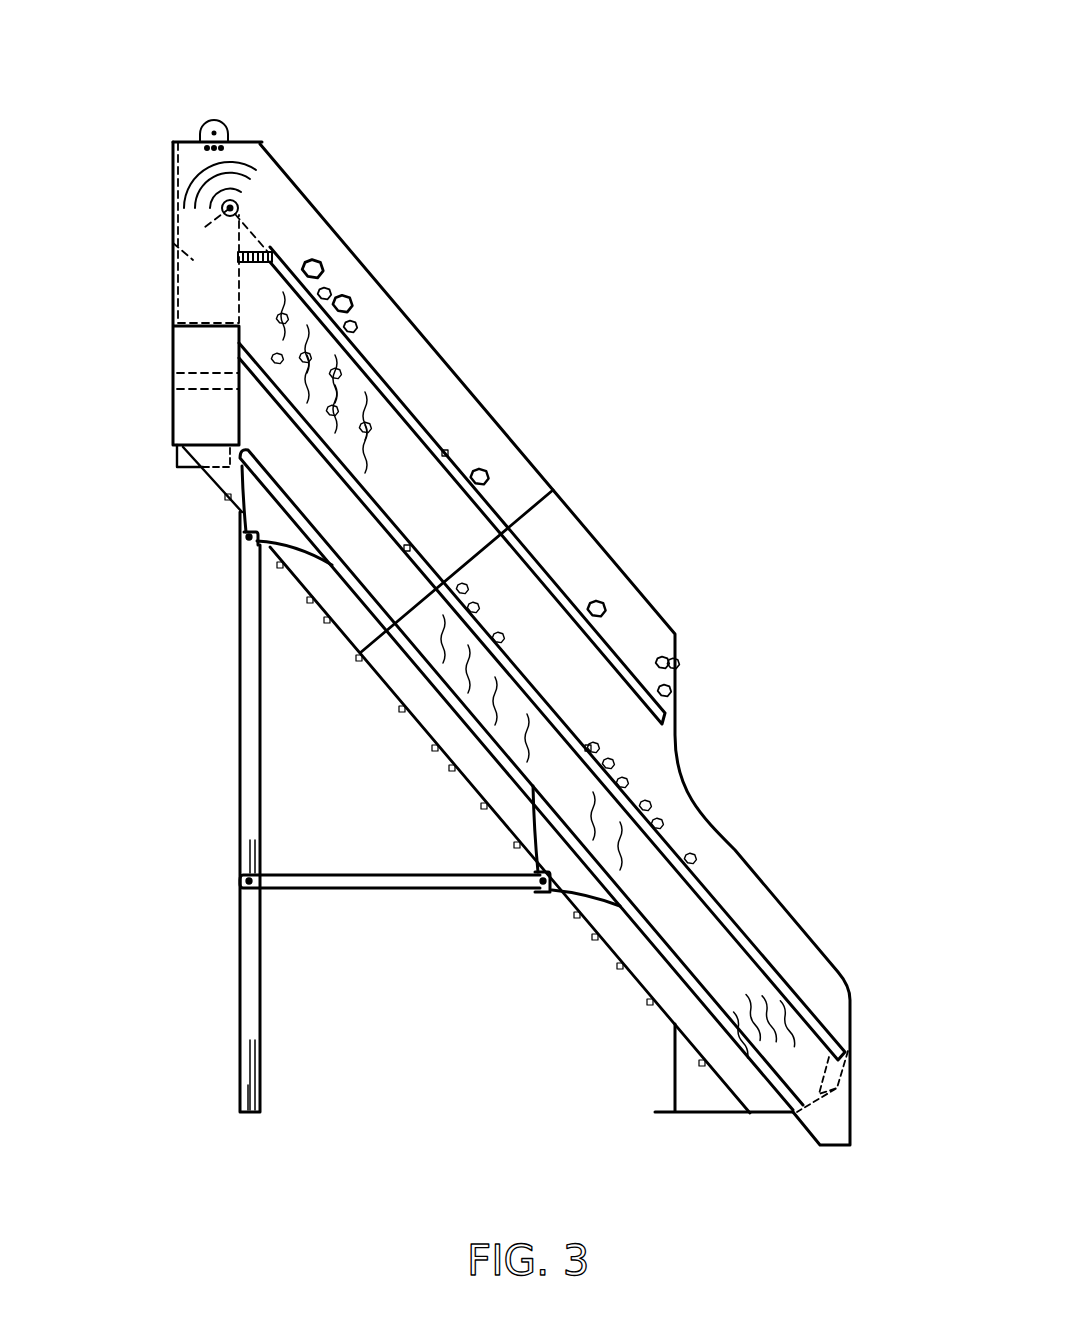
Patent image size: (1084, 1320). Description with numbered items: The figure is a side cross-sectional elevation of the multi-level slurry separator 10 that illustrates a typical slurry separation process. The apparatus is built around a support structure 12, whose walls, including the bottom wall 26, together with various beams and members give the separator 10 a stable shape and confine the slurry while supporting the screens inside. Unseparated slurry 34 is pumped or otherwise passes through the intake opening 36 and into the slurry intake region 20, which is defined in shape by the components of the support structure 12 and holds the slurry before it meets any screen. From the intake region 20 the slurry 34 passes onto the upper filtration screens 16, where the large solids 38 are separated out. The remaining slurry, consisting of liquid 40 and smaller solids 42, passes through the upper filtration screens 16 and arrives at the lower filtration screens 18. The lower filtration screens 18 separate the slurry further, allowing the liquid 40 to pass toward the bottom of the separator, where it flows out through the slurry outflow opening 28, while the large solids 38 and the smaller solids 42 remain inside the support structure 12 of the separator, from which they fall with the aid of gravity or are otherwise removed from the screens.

The multi-level slurry separator 10 is at (482, 112).
The support structure 12 is at (216, 846).
The upper filtration screens 16 is at (392, 350).
The lower filtration screens 18 is at (583, 698).
The slurry intake region 20 is at (203, 293).
The bottom wall 26 is at (417, 748).
The slurry outflow opening 28 is at (832, 1158).
The unseparated slurry 34 is at (266, 140).
The intake opening 36 is at (195, 485).
The large solids 38 is at (343, 280).
The liquid 40 is at (382, 457).
The smaller solids 42 is at (385, 420).